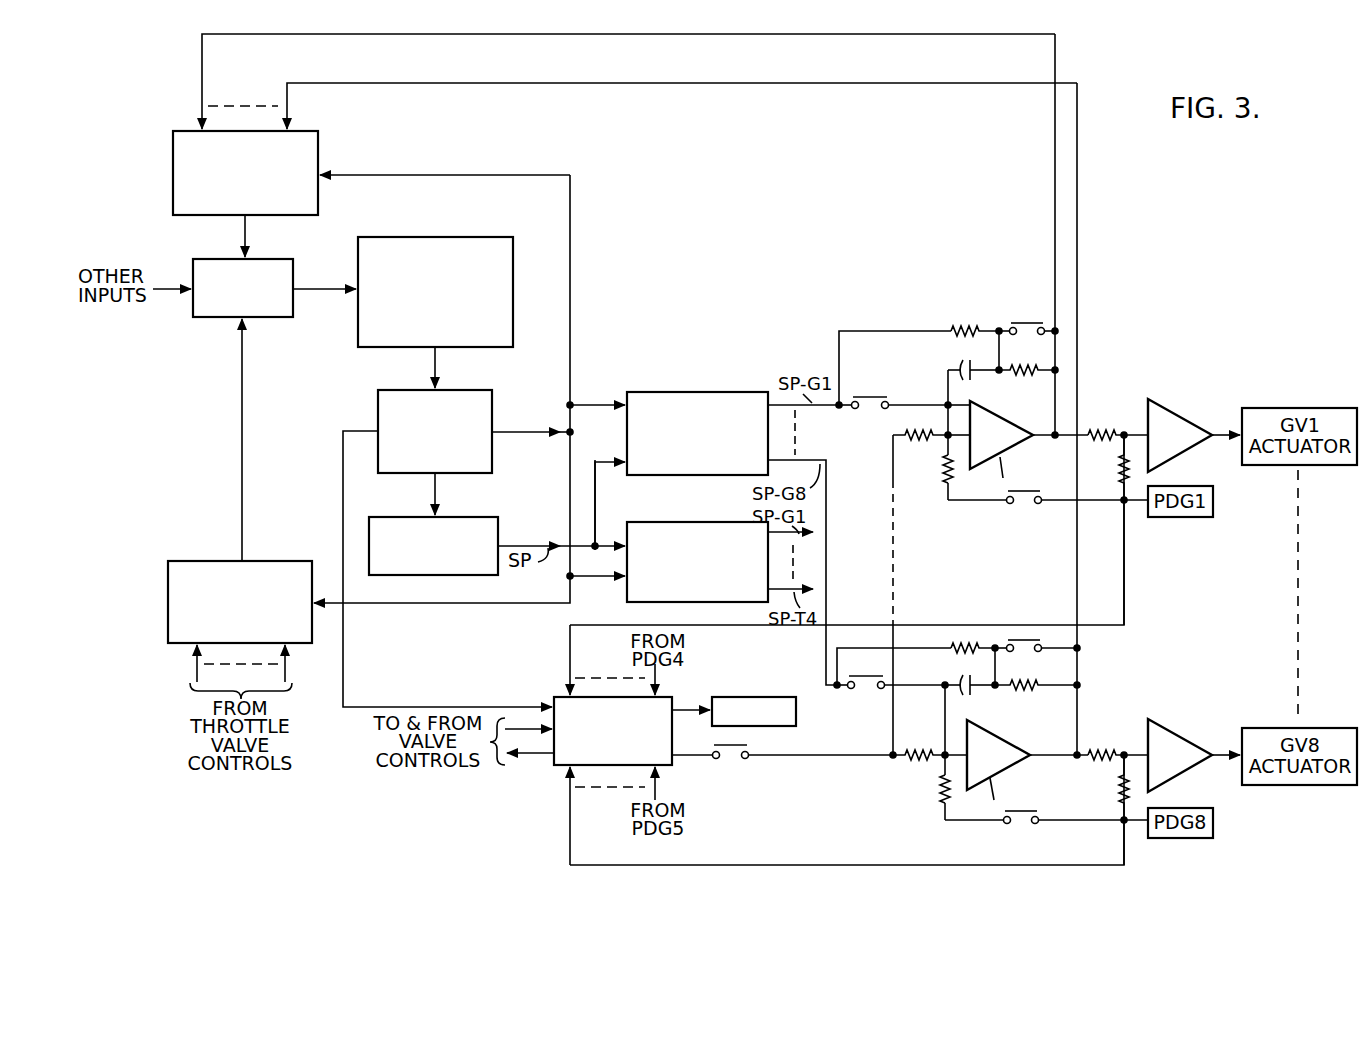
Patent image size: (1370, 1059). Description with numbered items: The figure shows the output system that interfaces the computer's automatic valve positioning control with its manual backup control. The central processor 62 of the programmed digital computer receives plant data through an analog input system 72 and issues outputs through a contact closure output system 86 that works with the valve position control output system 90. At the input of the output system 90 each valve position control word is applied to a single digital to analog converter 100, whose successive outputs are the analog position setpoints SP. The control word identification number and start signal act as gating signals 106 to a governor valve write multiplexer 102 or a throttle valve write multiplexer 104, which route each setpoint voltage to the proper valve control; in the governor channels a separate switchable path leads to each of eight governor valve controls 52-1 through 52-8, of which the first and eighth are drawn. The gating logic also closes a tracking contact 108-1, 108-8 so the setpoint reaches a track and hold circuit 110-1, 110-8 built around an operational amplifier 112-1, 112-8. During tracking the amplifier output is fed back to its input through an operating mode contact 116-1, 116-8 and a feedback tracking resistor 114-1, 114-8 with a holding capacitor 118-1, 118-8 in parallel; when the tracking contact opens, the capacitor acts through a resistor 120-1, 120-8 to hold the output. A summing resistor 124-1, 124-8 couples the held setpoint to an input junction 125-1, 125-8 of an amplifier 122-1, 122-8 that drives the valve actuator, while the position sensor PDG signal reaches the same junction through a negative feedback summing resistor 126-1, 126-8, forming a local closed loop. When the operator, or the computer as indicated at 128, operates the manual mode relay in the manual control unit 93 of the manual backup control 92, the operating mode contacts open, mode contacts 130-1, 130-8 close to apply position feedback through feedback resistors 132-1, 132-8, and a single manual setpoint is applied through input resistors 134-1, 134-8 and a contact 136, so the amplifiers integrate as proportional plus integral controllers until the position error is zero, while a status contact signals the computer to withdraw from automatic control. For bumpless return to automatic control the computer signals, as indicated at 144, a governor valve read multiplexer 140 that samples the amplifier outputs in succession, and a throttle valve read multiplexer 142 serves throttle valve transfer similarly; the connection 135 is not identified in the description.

The governor valve read multiplexer 140 is at (308, 131).
The analog input system 72 is at (282, 259).
The central processor 62 is at (488, 237).
The contact closure output system 86 is at (472, 391).
The digital to analog converter 100 is at (415, 517).
The governor valve write multiplexer 102 is at (680, 392).
The throttle valve write multiplexer 104 is at (688, 522).
The throttle valve read multiplexer 142 is at (279, 561).
The manual mode signal to read multiplexer 144 is at (570, 246).
The gating control signal 106 is at (531, 431).
The valve position control output system 90 is at (565, 512).
The manual mode relay operating signal 128 is at (343, 678).
The manual control output line 135 is at (568, 631).
The manual control unit 93 is at (559, 697).
The manual backup control system 92 is at (716, 687).
The manual mode contact 136 is at (744, 758).
The tracking contact 108-1 is at (890, 402).
The feedback tracking resistor 114-1 is at (961, 328).
The operating mode contact 116-1 is at (1047, 335).
The holding capacitor 118-1 is at (970, 360).
The holding resistor 120-1 is at (1031, 374).
The input resistor 134-1 is at (919, 433).
The feedback resistor 132-1 is at (946, 470).
The governor valve control 52-1 is at (1048, 414).
The operational amplifier 112-1 is at (988, 474).
The track and hold circuit 110-1 is at (1069, 440).
The mode contact 130-1 is at (1022, 506).
The summing resistor 124-1 is at (1102, 428).
The input junction 125-1 is at (1126, 430).
The negative feedback summing resistor 126-1 is at (1118, 470).
The amplifier 122-1 is at (1166, 413).
The tracking contact 108-8 is at (868, 689).
The feedback tracking resistor 114-8 is at (966, 648).
The operating mode contact 116-8 is at (1018, 652).
The holding capacitor 118-8 is at (965, 678).
The holding resistor 120-8 is at (1026, 694).
The input resistor 134-8 is at (913, 765).
The feedback resistor 132-8 is at (940, 795).
The governor valve control 52-8 is at (1060, 736).
The operational amplifier 112-8 is at (976, 797).
The track and hold circuit 110-8 is at (1082, 758).
The mode contact 130-8 is at (1020, 823).
The summing resistor 124-8 is at (1100, 750).
The input junction 125-8 is at (1126, 750).
The negative feedback summing resistor 126-8 is at (1118, 794).
The amplifier 122-8 is at (1165, 738).